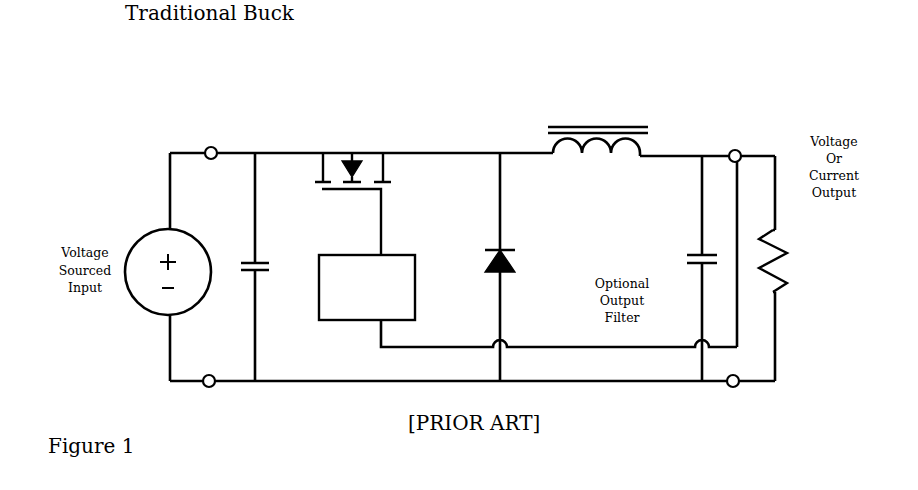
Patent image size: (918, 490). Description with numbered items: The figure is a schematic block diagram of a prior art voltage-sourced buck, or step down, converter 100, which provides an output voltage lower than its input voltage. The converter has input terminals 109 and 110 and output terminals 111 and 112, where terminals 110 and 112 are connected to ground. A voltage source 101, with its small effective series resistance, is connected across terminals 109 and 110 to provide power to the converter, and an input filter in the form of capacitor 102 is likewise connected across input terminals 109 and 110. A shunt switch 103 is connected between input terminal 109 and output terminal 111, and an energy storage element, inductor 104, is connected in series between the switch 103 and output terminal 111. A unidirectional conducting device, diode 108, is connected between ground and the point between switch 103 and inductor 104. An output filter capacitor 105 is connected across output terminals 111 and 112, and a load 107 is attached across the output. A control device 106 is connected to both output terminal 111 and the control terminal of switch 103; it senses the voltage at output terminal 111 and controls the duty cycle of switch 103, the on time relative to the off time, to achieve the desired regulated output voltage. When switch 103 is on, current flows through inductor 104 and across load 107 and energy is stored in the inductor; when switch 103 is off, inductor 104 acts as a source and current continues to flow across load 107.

The buck converter 100 is at (130, 128).
The voltage source 101 is at (140, 236).
The capacitor 102 is at (269, 268).
The shunt switch 103 is at (395, 166).
The inductor 104 is at (619, 116).
The capacitor 105 is at (673, 260).
The control device 106 is at (414, 258).
The load 107 is at (798, 290).
The diode 108 is at (518, 268).
The input terminal 109 is at (214, 145).
The input terminal 110 is at (210, 388).
The output terminal 111 is at (736, 148).
The output terminal 112 is at (734, 388).